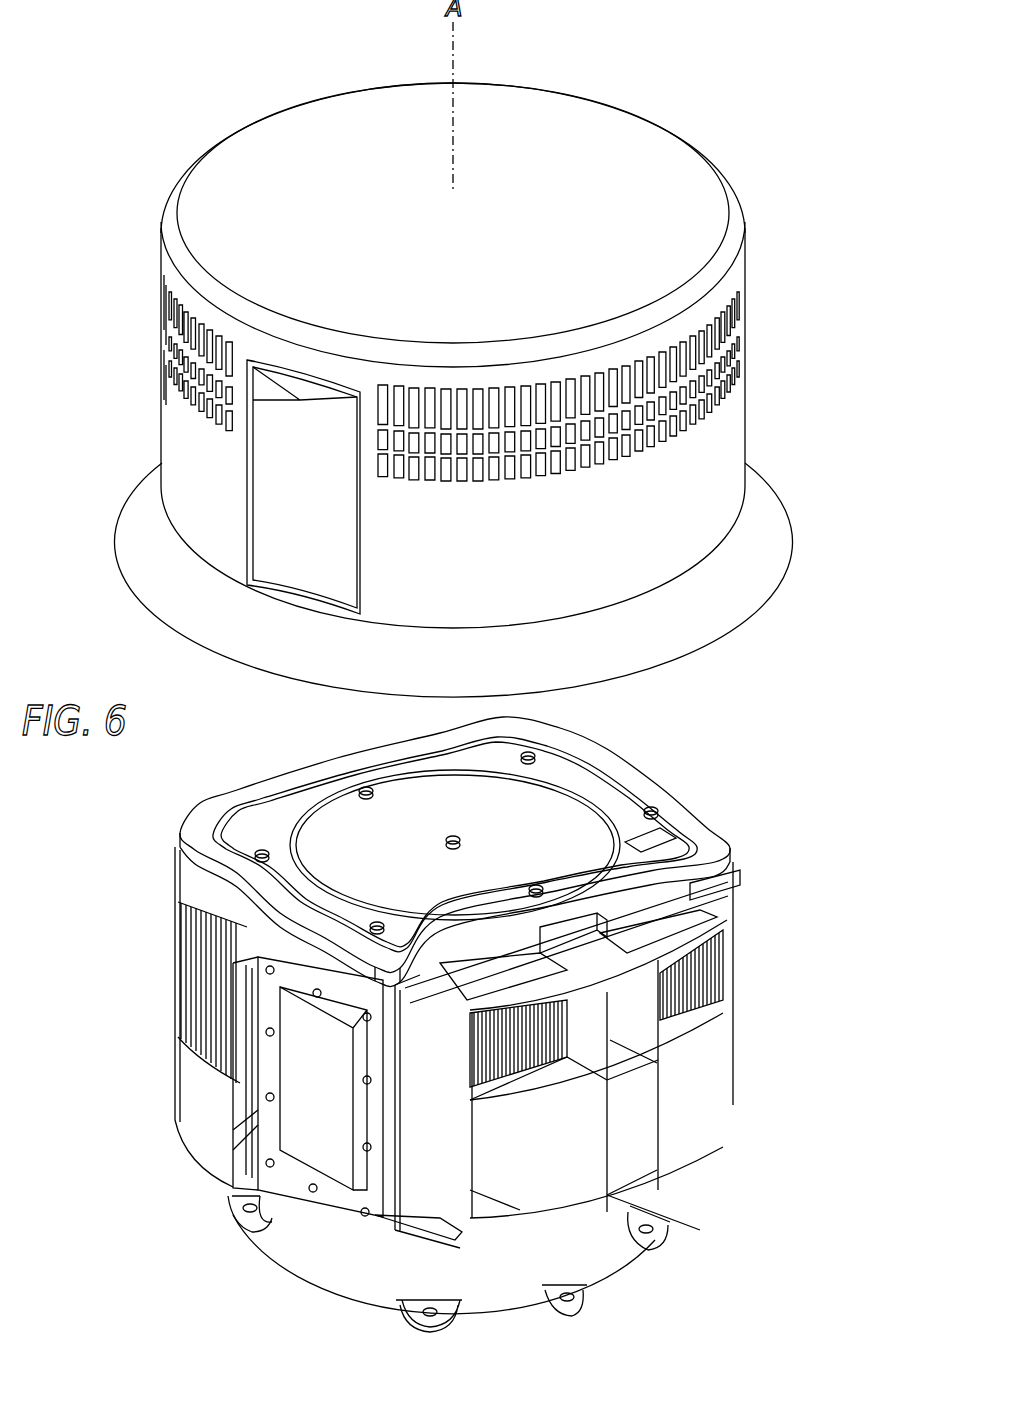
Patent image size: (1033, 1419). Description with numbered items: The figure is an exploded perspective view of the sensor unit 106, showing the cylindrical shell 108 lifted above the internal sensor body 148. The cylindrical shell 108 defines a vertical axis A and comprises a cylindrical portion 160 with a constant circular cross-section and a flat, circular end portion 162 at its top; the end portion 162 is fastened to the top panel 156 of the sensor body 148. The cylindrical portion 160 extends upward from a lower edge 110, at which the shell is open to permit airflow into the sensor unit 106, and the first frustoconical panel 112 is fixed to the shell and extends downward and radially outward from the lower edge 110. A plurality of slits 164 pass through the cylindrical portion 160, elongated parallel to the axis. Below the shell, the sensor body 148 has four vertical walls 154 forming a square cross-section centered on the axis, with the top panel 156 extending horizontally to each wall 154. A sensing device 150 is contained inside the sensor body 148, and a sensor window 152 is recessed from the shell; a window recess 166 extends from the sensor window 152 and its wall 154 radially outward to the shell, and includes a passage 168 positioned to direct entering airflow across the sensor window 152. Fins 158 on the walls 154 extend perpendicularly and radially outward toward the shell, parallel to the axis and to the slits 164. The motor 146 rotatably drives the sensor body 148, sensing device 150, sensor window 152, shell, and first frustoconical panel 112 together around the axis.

The sensor unit 106 is at (180, 64).
The cylindrical shell 108 is at (736, 196).
The lower edge 110 is at (680, 590).
The first frustoconical panel 112 is at (752, 576).
The motor 146 is at (555, 822).
The sensor body 148 is at (714, 836).
The sensing device 150 is at (390, 900).
The sensor window 152 is at (325, 1134).
The walls 154 is at (185, 882).
The top panel 156 is at (585, 845).
The fins 158 is at (198, 986).
The cylindrical portion 160 is at (738, 446).
The end portion 162 is at (577, 118).
The slits 164 is at (742, 338).
The window recesses 166 is at (586, 840).
The passages 168 is at (246, 1110).